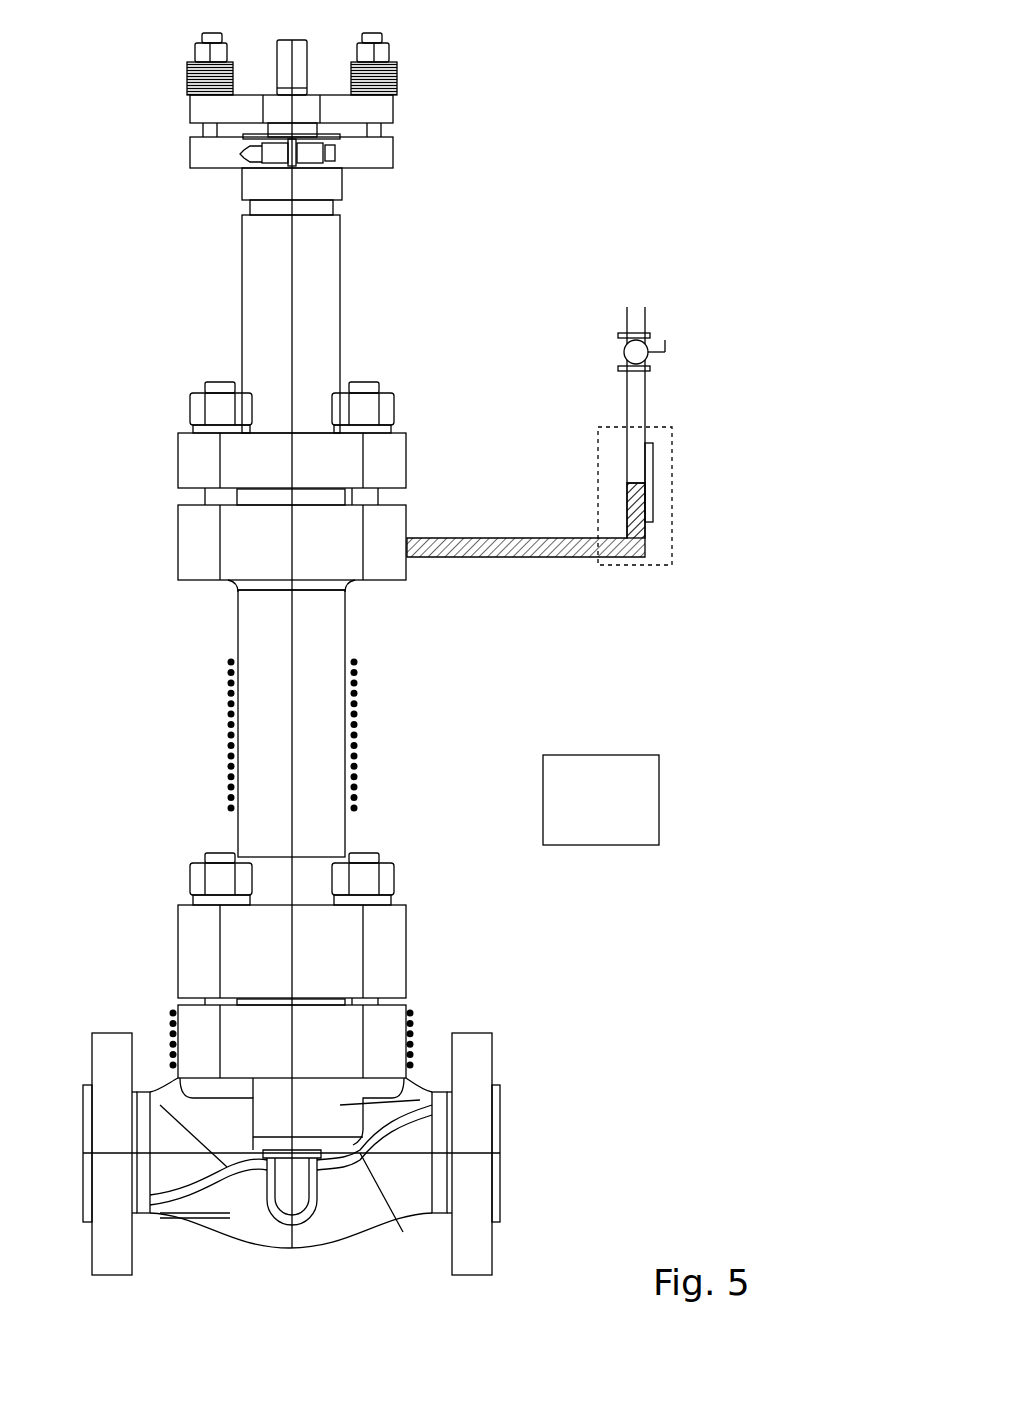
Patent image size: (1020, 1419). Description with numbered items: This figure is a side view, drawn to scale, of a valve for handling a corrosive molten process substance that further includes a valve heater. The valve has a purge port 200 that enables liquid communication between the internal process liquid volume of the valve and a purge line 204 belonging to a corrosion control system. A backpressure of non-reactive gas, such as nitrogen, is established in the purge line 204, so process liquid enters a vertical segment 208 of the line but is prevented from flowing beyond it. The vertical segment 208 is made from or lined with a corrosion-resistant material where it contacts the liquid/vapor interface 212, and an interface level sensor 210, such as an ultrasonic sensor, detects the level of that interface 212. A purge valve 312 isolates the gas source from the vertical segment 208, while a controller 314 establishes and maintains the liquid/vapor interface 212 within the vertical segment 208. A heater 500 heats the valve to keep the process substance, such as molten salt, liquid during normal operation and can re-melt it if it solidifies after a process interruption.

The purge port 200 is at (600, 521).
The purge line 204 is at (515, 557).
The vertical segment 208 is at (696, 475).
The interface level sensor 210 is at (653, 495).
The liquid/vapor interface 212 is at (633, 482).
The purge valve 312 is at (623, 352).
The controller 314 is at (412, 1013).
The heater 500 is at (358, 703).